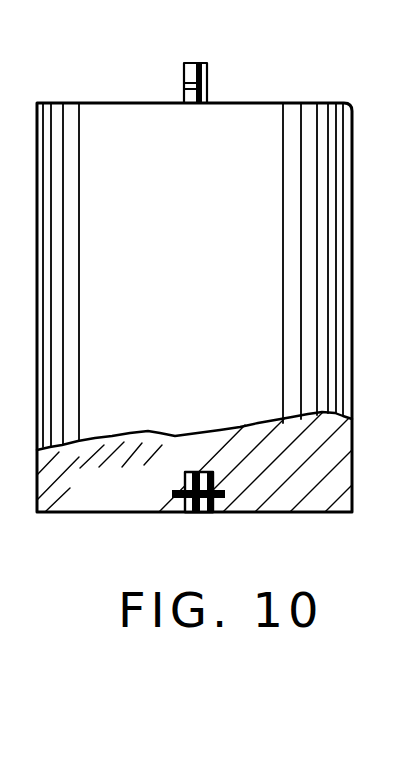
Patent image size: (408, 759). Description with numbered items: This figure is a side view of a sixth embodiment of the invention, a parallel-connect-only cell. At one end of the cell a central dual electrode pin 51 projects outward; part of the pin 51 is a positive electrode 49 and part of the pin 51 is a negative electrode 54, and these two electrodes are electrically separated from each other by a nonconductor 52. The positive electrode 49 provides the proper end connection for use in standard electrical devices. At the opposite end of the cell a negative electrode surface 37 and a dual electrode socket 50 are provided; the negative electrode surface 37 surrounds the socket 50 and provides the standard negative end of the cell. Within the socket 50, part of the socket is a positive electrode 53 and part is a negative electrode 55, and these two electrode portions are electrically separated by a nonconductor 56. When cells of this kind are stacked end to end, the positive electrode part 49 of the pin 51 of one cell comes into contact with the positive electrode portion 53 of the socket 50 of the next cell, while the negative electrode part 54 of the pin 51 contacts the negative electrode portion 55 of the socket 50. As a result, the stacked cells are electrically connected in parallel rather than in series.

The negative electrode surface 37 is at (158, 513).
The positive electrode 49 is at (186, 99).
The dual electrode socket 50 is at (206, 523).
The central dual electrode pin 51 is at (215, 62).
The nonconductor 52 is at (208, 80).
The positive electrode 53 is at (192, 472).
The negative electrode 54 is at (208, 97).
The negative electrode 55 is at (185, 502).
The nonconductor 56 is at (222, 490).